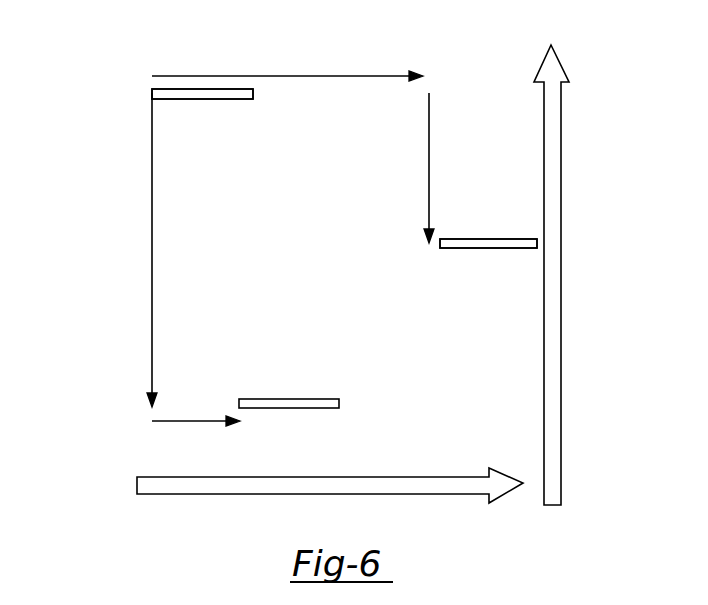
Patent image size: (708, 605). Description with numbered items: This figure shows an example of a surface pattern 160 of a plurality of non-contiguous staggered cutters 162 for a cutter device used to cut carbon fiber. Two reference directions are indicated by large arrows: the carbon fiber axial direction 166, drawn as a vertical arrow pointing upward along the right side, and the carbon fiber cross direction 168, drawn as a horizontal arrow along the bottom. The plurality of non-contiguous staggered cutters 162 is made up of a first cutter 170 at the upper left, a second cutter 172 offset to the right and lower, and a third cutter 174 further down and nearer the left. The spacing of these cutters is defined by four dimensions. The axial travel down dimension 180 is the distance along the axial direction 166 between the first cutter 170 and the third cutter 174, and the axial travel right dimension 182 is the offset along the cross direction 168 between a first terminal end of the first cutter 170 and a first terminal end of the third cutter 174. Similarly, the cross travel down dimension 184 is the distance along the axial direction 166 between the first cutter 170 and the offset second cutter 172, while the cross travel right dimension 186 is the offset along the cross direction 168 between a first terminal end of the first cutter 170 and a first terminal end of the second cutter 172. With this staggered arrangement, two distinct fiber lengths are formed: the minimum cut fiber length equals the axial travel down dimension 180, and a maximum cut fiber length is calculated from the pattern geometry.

The surface pattern 160 is at (104, 68).
The non-contiguous staggered cutters 162 is at (152, 91).
The carbon fiber axial direction 166 is at (558, 346).
The carbon fiber cross direction 168 is at (212, 494).
The first cutter 170 is at (228, 99).
The second cutter 172 is at (488, 249).
The third cutter 174 is at (298, 399).
The axial travel down dimension 180 is at (152, 229).
The axial travel right dimension 182 is at (191, 421).
The cross travel down dimension 184 is at (429, 185).
The cross travel right dimension 186 is at (372, 76).